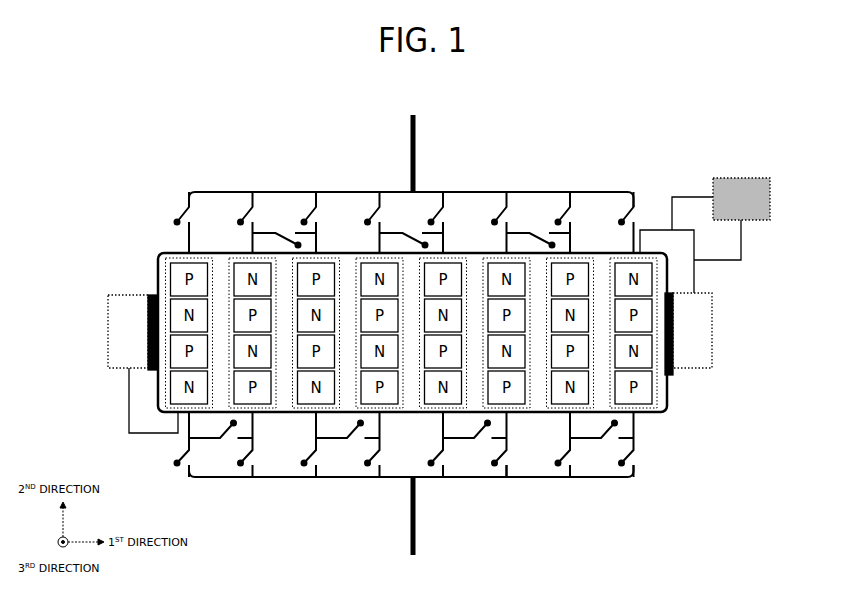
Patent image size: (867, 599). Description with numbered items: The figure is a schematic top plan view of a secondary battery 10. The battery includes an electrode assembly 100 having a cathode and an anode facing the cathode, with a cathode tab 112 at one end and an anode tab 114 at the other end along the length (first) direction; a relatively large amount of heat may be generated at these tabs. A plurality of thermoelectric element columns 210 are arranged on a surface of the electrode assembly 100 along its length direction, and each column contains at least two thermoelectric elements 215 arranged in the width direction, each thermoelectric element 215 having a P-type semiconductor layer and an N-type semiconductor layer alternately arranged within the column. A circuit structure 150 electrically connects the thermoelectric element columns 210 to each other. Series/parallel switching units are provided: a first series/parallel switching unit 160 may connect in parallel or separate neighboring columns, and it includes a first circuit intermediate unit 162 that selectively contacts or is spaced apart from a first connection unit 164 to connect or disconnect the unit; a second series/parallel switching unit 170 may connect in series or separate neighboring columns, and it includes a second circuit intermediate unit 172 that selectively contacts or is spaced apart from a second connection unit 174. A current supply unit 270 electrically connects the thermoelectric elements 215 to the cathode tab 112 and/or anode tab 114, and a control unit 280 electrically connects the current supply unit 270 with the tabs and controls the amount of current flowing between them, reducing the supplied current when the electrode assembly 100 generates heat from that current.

The secondary battery 10 is at (76, 201).
The electrode assembly 100 is at (223, 246).
The cathode tab 112 is at (118, 293).
The anode tab 114 is at (700, 343).
The circuit structure 150 is at (598, 186).
The first series/parallel switching unit 160 is at (404, 468).
The first circuit intermediate unit 162 is at (499, 467).
The first connection unit 164 is at (508, 470).
The second series/parallel switching unit 170 is at (470, 435).
The second circuit intermediate unit 172 is at (619, 426).
The second connection unit 174 is at (622, 440).
The thermoelectric element column 210 is at (152, 394).
The thermoelectric element 215 is at (656, 388).
The current supply unit 270 is at (696, 279).
The control unit 280 is at (766, 194).